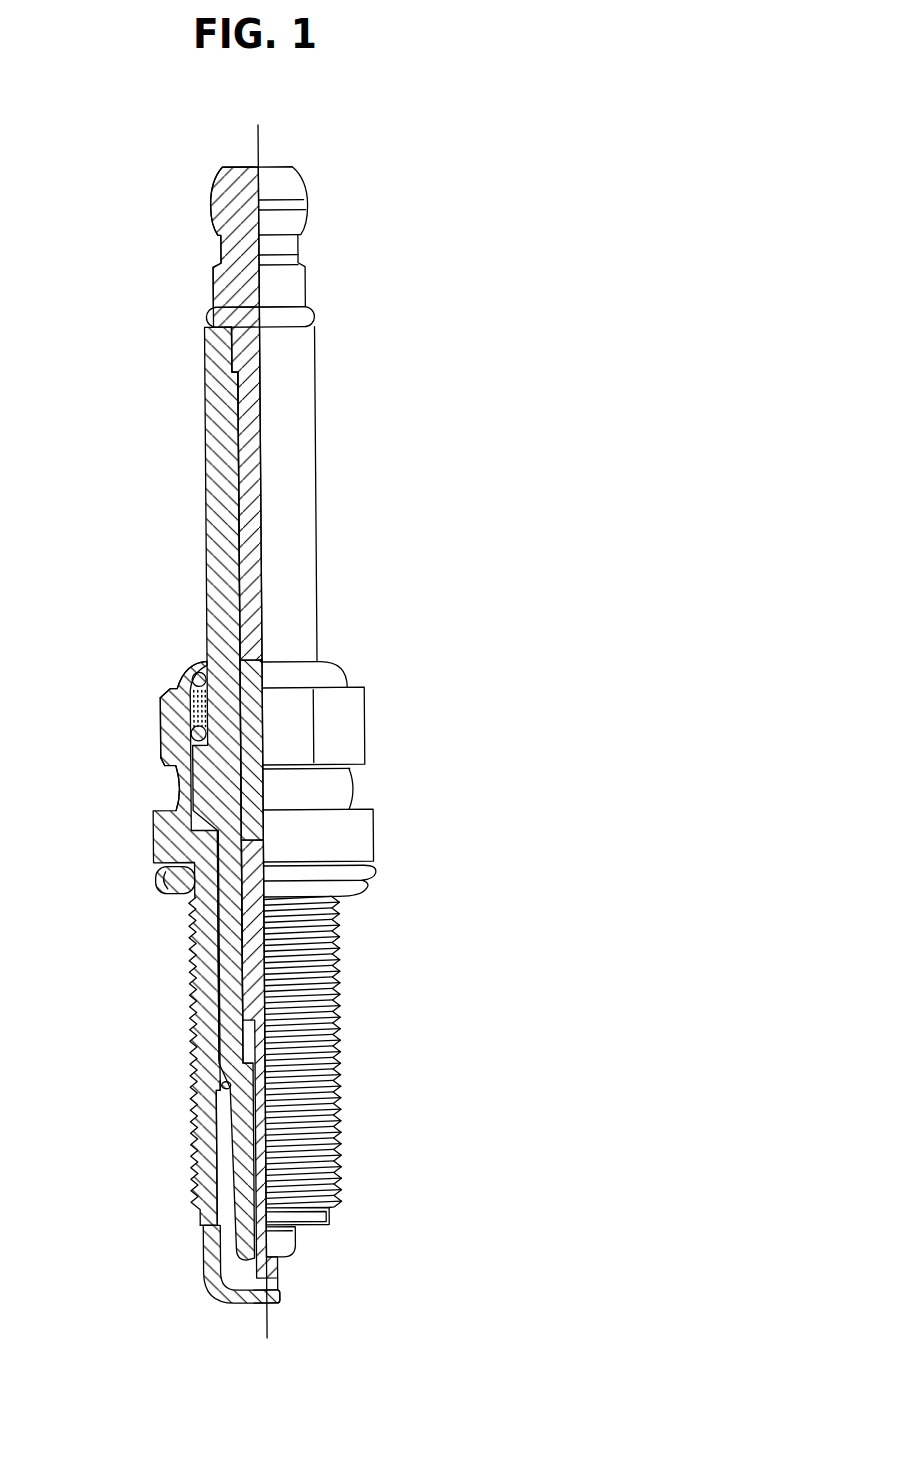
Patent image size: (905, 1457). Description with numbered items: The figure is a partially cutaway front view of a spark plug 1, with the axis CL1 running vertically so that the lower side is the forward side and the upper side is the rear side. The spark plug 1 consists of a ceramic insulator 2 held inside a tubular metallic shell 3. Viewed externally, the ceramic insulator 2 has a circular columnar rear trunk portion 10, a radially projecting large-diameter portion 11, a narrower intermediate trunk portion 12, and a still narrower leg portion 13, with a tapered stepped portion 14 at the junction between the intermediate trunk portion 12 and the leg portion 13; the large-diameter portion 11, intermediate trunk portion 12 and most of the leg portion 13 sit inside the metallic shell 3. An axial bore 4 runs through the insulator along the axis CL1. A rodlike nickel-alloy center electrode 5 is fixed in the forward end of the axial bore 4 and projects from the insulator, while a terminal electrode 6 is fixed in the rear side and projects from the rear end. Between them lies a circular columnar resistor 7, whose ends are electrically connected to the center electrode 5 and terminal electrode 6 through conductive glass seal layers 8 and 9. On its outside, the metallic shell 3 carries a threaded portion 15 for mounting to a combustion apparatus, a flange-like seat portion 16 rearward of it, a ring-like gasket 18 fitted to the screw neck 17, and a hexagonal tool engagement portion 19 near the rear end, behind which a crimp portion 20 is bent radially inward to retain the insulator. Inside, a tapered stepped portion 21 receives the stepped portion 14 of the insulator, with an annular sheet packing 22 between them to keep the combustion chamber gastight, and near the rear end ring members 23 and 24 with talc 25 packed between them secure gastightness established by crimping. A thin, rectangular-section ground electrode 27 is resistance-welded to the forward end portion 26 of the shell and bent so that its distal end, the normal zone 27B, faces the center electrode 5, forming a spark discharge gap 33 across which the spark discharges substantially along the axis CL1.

The spark plug 1 is at (440, 376).
The ceramic insulator 2 is at (327, 583).
The metallic shell 3 is at (387, 686).
The axial bore 4 is at (228, 447).
The center electrode 5 is at (211, 1173).
The terminal electrode 6 is at (300, 182).
The resistor 7 is at (312, 992).
The electrically conductive glass seal layer 8 is at (313, 1038).
The electrically conductive glass seal layer 9 is at (258, 790).
The rear trunk portion 10 is at (313, 475).
The large-diameter portion 11 is at (168, 793).
The intermediate trunk portion 12 is at (192, 972).
The leg portion 13 is at (191, 1218).
The stepped portion 14 is at (198, 1100).
The threaded portion 15 is at (327, 1113).
The seat portion 16 is at (368, 838).
The screw neck 17 is at (329, 897).
The gasket 18 is at (152, 878).
The tool engagement portion 19 is at (361, 727).
The crimp portion 20 is at (197, 660).
The stepped portion 21 is at (216, 1080).
The sheet packing 22 is at (214, 1086).
The ring member 23 is at (187, 677).
The ring member 24 is at (143, 730).
The talc 25 is at (139, 682).
The forward end portion 26 is at (195, 1240).
The ground electrode 27 is at (194, 1294).
The normal zone 27B is at (264, 1305).
The spark discharge gap 33 is at (285, 1287).
The axis CL1 is at (262, 137).